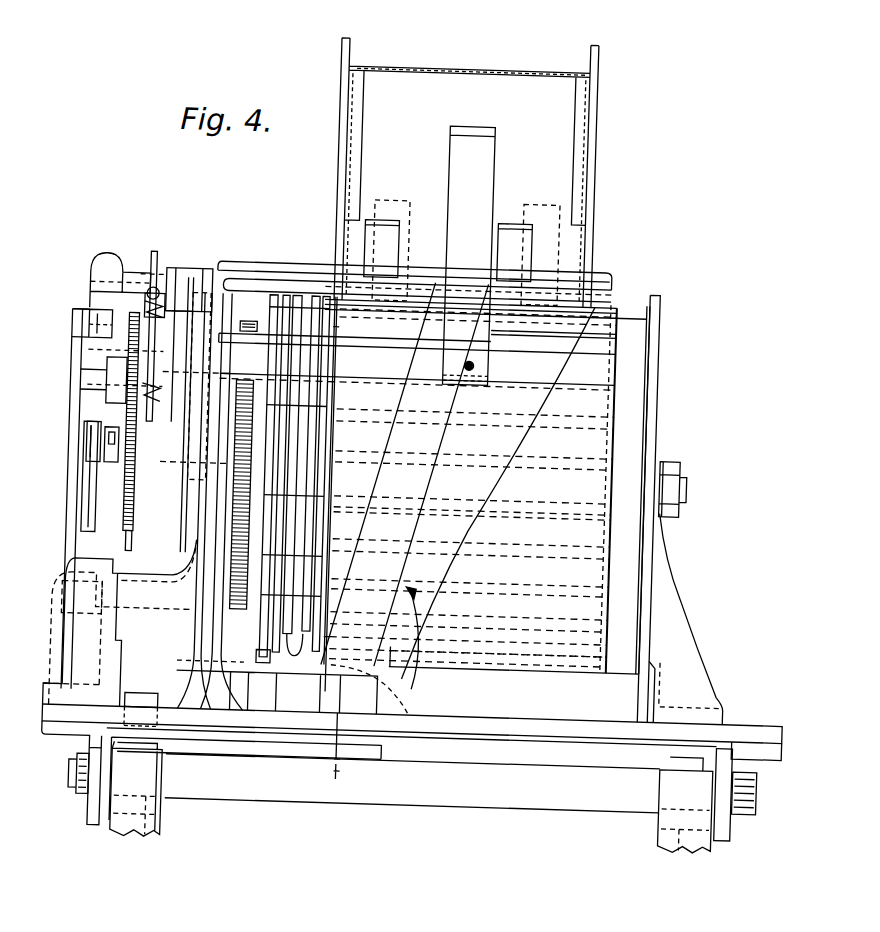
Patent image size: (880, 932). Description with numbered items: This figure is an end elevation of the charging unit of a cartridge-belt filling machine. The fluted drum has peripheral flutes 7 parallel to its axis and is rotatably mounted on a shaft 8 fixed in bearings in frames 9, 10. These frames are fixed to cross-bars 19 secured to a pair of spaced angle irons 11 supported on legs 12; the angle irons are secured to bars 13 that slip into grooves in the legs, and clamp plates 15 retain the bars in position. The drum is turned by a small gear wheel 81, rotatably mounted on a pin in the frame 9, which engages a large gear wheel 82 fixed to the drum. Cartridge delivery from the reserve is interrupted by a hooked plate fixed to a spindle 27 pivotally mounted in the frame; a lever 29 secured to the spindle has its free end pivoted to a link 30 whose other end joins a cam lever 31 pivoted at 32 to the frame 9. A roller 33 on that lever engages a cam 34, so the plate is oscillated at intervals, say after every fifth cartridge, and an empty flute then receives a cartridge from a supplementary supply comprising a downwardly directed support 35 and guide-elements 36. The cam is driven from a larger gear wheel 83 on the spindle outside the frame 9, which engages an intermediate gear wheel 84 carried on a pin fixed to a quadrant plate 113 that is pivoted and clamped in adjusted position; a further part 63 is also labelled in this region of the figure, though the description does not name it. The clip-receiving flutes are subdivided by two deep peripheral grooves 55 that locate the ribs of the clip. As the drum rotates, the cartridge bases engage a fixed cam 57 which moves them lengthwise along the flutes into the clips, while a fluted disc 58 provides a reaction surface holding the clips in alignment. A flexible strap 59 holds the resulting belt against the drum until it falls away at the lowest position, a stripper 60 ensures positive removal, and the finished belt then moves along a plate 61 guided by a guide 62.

The peripheral flutes 7 is at (520, 404).
The shaft 8 is at (688, 478).
The frame 9 is at (66, 640).
The frame 10 is at (682, 588).
The angle irons 11 is at (74, 738).
The legs 12 is at (172, 836).
The bars 13 is at (512, 790).
The clamp plates 15 is at (157, 757).
The cross-bars 19 is at (745, 715).
The spindle 27 is at (246, 326).
The lever 29 is at (88, 318).
The link 30 is at (90, 350).
The cam lever 31 is at (72, 396).
The pivot 32 is at (70, 596).
The roller 33 is at (92, 444).
The cam 34 is at (84, 536).
The downwardly directed support 35 is at (478, 82).
The guide-elements 36 is at (390, 212).
The deep peripheral grooves 55 is at (300, 650).
The fixed cam 57 is at (532, 660).
The fluted disc 58 is at (258, 668).
The flexible strap 59 is at (425, 484).
The stripper 60 is at (387, 652).
The plate 61 is at (324, 674).
The guide 62 is at (146, 712).
The bar 63 is at (150, 260).
The small gear wheel 81 is at (248, 340).
The large gear wheel 82 is at (238, 610).
The larger gear wheel 83 is at (128, 320).
The intermediate gear wheel 84 is at (137, 546).
The quadrant plate 113 is at (140, 438).